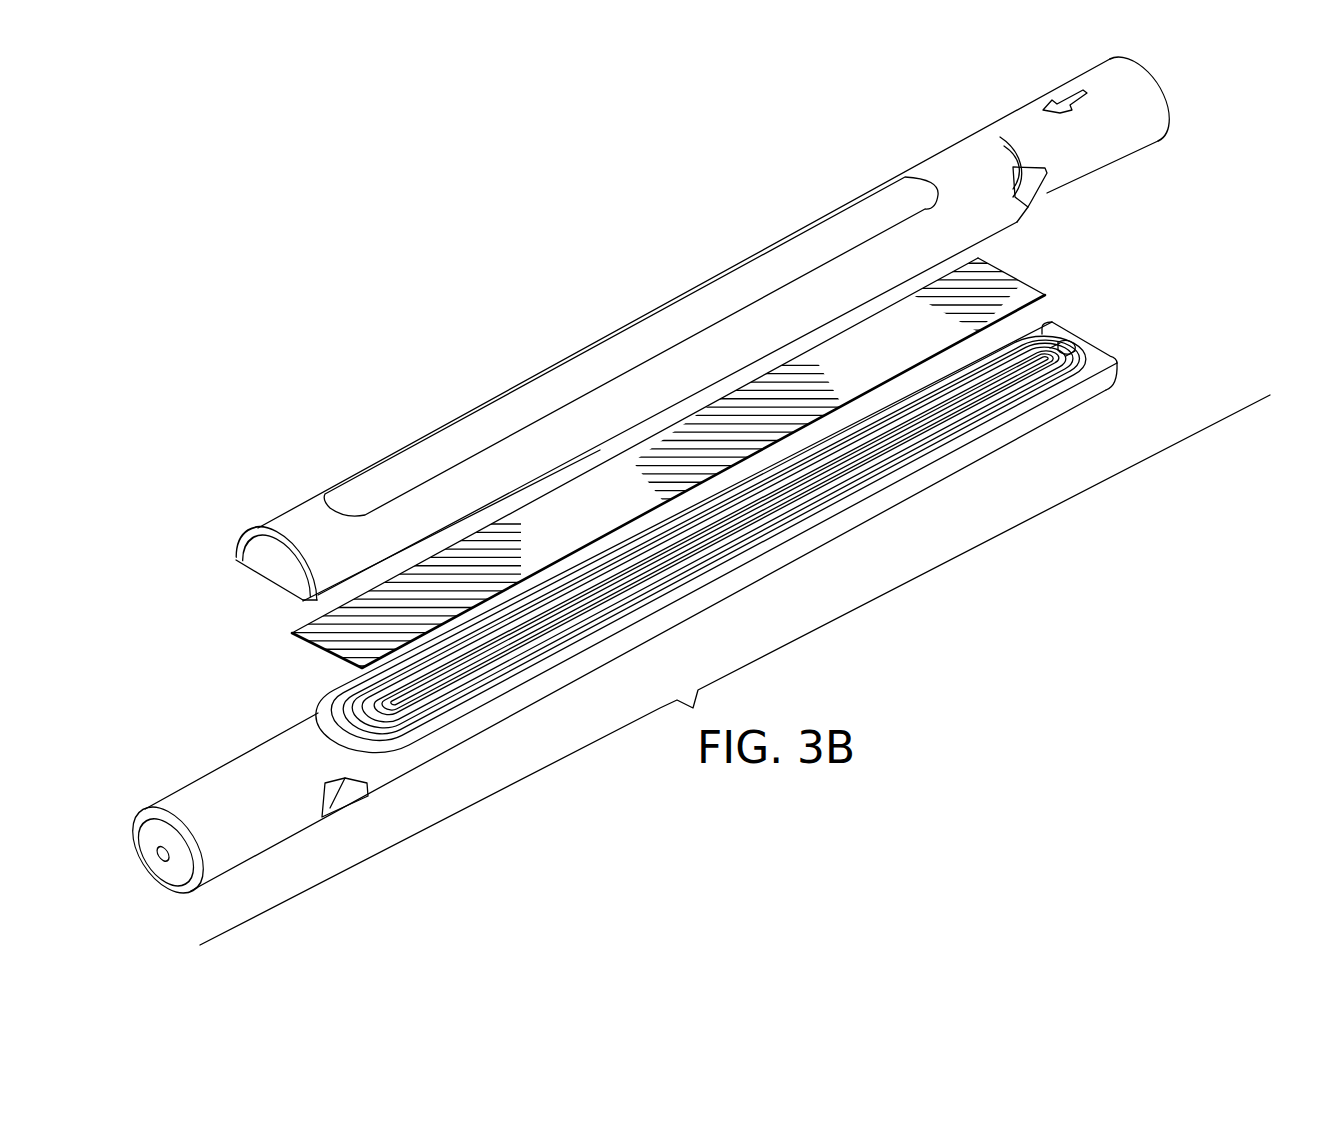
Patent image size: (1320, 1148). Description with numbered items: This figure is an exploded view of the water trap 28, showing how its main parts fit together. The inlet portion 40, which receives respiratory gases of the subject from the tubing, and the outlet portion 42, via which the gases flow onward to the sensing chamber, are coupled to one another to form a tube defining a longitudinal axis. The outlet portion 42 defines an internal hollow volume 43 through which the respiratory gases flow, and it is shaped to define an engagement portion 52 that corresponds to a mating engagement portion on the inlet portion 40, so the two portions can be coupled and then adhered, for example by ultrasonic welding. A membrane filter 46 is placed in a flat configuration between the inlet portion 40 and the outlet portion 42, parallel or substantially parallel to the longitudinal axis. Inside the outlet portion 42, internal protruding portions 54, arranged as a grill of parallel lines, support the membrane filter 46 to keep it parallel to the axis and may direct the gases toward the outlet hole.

The water trap 28 is at (373, 409).
The inlet portion 40 is at (682, 313).
The outlet portion 42 is at (285, 738).
The internal hollow volume 43 is at (375, 725).
The membrane filter 46 is at (323, 636).
The engagement portion 52 is at (947, 448).
The internal protruding portions 54 is at (1044, 382).